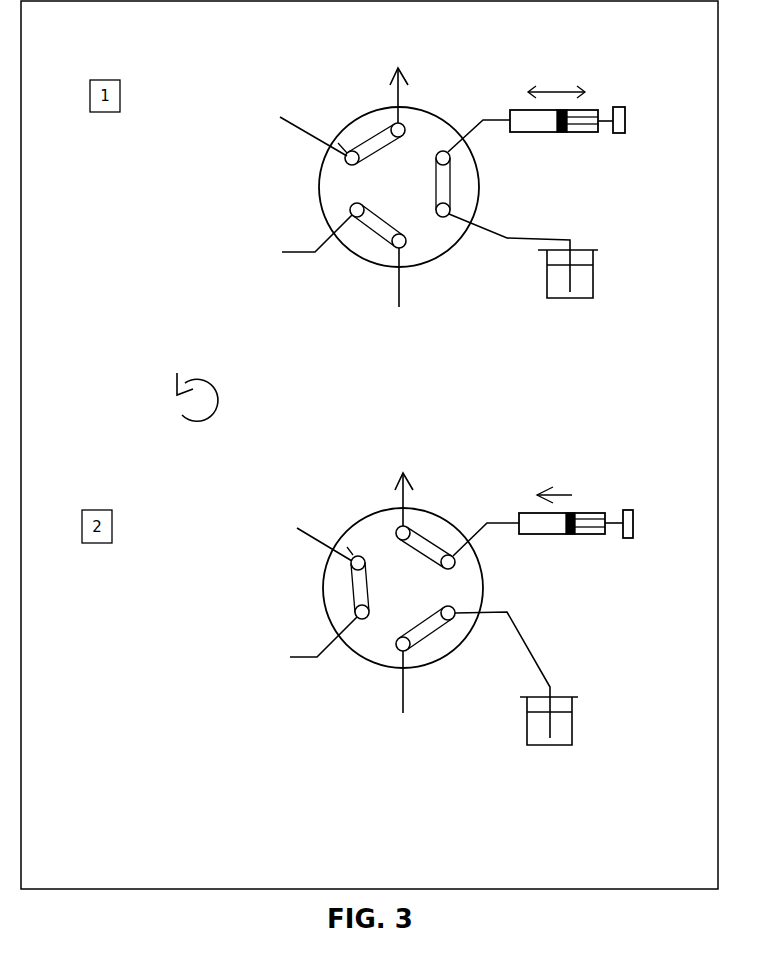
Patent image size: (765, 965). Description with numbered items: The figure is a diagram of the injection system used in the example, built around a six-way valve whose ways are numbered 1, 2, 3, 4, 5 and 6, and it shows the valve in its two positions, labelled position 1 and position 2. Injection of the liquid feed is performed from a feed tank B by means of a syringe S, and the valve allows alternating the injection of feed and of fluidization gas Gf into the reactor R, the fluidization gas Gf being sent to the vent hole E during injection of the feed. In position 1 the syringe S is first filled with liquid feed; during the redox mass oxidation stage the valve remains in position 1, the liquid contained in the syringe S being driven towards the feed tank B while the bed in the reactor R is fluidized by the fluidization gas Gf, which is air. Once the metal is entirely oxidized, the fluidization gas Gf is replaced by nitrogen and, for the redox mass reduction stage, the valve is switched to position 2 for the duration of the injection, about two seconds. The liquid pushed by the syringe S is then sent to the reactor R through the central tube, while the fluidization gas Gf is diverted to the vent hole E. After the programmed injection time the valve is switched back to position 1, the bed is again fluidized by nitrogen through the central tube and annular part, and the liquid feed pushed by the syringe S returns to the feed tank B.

The valve way 1 is at (348, 362).
The valve way 2 is at (399, 330).
The valve way 3 is at (453, 362).
The valve way 4 is at (452, 415).
The valve way 5 is at (401, 446).
The valve way 6 is at (351, 411).
The reactor R is at (401, 286).
The fluidization gas Gf is at (302, 332).
The vent hole E is at (328, 478).
The syringe S is at (551, 321).
The feed tank B is at (533, 479).